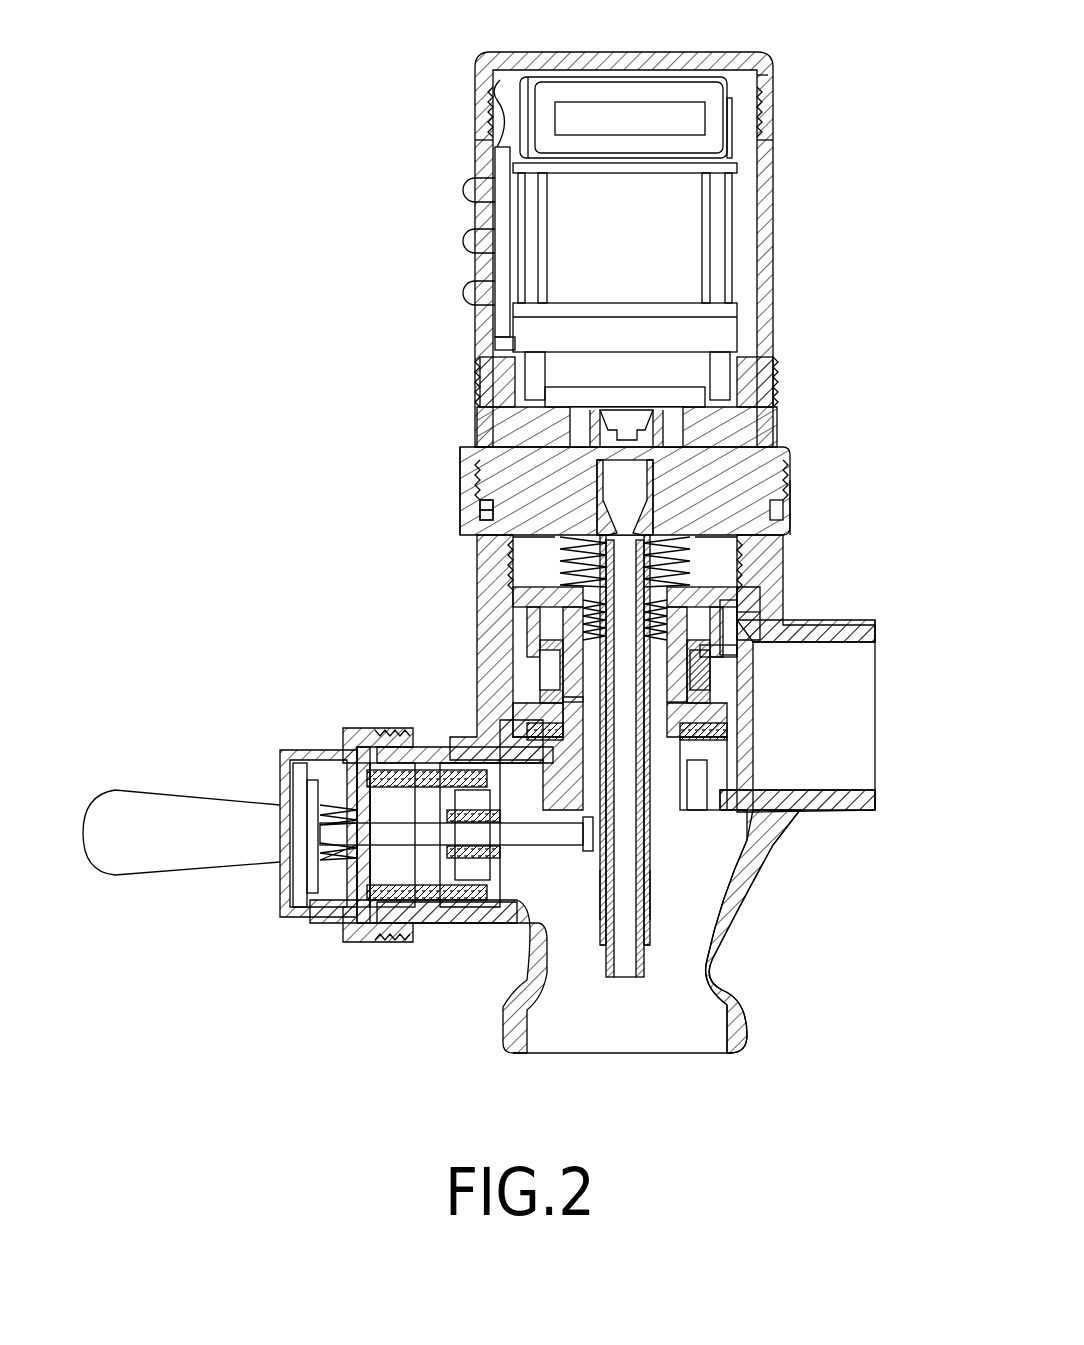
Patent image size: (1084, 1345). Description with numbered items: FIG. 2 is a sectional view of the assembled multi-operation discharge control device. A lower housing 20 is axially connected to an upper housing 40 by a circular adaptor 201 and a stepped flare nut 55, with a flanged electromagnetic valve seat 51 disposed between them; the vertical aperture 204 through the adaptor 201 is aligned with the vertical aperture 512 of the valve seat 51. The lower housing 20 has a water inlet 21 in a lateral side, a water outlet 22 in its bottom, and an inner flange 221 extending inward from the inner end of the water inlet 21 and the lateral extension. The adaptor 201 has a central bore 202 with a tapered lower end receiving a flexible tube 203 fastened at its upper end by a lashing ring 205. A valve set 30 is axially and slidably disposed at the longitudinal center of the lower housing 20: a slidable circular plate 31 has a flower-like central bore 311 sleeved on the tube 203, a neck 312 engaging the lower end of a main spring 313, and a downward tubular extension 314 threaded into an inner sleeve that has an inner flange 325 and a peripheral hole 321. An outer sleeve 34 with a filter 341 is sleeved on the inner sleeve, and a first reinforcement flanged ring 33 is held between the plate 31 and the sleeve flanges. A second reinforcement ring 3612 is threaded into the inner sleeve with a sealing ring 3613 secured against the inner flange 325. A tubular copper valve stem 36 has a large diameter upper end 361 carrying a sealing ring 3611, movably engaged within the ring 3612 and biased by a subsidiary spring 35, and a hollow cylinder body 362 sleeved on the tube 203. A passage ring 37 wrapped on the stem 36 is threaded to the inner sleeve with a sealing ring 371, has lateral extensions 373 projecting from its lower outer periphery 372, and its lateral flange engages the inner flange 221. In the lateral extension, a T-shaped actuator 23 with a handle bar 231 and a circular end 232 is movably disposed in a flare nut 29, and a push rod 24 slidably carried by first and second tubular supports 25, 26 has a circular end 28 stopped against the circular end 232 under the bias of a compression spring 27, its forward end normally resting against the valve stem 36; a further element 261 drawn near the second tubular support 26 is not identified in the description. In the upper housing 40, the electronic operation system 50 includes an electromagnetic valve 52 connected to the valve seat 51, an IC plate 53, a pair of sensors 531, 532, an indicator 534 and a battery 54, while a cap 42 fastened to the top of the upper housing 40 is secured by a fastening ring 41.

The lower housing 20 is at (455, 555).
The water inlet 21 is at (847, 775).
The water outlet 22 is at (620, 1028).
The actuator 23 is at (118, 770).
The push rod 24 is at (545, 832).
The first tubular support 25 is at (365, 930).
The second tubular support 26 is at (414, 897).
The compression spring 27 is at (325, 862).
The circular end 28 is at (307, 785).
The flare nut 29 is at (290, 750).
The valve set 30 is at (533, 680).
The slidable circular plate 31 is at (775, 587).
The first reinforcement flanged ring 33 is at (742, 602).
The outer sleeve 34 is at (729, 700).
The subsidiary spring 35 is at (582, 618).
The tubular valve stem 36 is at (650, 915).
The passage ring 37 is at (729, 760).
The upper housing 40 is at (772, 190).
The fastening ring 41 is at (773, 95).
The cap 42 is at (771, 62).
The electronic operation system 50 is at (748, 259).
The flanged electromagnetic valve seat 51 is at (771, 420).
The electromagnetic valve 52 is at (683, 232).
The IC plate 53 is at (497, 325).
The battery 54 is at (643, 113).
The stepped flare nut 55 is at (777, 500).
The circular adaptor 201 is at (780, 528).
The central bore 202 is at (655, 480).
The tube 203 is at (645, 965).
The vertical aperture 204 is at (485, 500).
The lashing ring 205 is at (480, 480).
The inner flange 221 is at (707, 790).
The handle bar 231 is at (145, 858).
The circular end 232 is at (300, 880).
The seal ring 261 is at (470, 897).
The flower like central bore 311 is at (760, 572).
The neck 312 is at (553, 575).
The main spring 313 is at (540, 562).
The tubular extension 314 is at (522, 600).
The peripheral hole 321 is at (772, 622).
The inner flange 325 is at (545, 720).
The filter 341 is at (739, 640).
The large diameter upper end 361 is at (575, 652).
The hollow cylinder body 362 is at (652, 897).
The sealing ring 371 is at (729, 733).
The lower outer periphery 372 is at (653, 856).
The lateral extensions 373 is at (653, 832).
The vertical aperture 512 is at (480, 455).
The sensor 531 is at (468, 294).
The sensor 532 is at (468, 245).
The indicator 534 is at (468, 190).
The sealing ring 3611 is at (690, 662).
The second reinforcement ring 3612 is at (545, 660).
The sealing ring 3613 is at (712, 684).